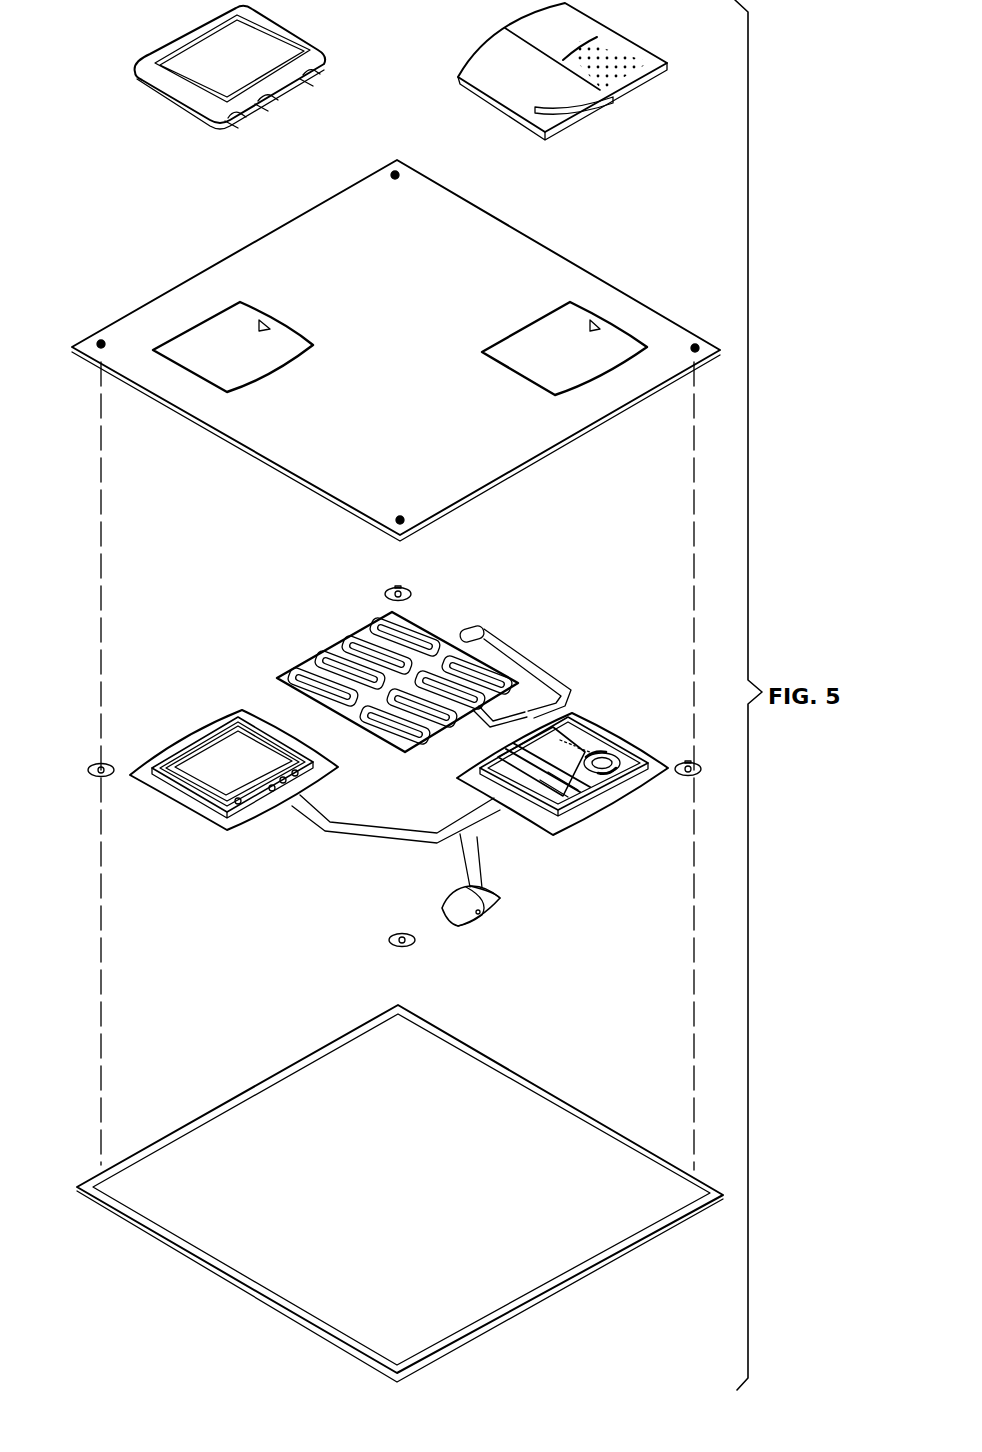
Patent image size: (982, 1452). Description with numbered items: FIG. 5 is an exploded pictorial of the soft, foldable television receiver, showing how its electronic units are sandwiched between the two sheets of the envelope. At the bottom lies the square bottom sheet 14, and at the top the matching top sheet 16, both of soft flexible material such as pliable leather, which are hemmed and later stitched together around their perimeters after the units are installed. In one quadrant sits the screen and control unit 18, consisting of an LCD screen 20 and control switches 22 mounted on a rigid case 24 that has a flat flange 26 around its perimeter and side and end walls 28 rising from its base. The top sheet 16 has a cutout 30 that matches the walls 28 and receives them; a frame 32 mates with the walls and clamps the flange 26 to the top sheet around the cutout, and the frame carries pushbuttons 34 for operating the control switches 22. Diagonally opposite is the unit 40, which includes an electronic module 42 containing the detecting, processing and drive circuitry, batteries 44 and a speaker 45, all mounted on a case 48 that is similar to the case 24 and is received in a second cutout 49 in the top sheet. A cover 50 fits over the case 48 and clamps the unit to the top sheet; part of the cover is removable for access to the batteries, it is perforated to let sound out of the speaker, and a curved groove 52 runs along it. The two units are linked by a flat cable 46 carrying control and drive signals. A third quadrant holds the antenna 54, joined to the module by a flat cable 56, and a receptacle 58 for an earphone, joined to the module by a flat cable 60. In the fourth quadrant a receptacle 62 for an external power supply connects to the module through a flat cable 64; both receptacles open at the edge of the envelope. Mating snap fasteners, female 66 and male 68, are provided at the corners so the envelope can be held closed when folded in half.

The bottom sheet 14 is at (538, 1300).
The top sheet 16 is at (552, 448).
The screen and control unit 18 is at (226, 765).
The LCD screen 20 is at (230, 742).
The control switches 22 is at (283, 783).
The rigid case 24 is at (155, 795).
The flat flange 26 is at (215, 818).
The side and end walls 28 is at (182, 737).
The cutout 30 is at (270, 328).
The frame 32 is at (180, 97).
The pushbuttons 34 is at (312, 72).
The unit 40 is at (530, 770).
The electronic module 42 is at (572, 727).
The batteries 44 is at (583, 780).
The speaker 45 is at (610, 745).
The flat cable 46 is at (362, 837).
The case 48 is at (463, 785).
The cutout 49 is at (598, 328).
The cover 50 is at (615, 26).
The curved groove 52 is at (572, 110).
The antenna 54 is at (422, 620).
The flat cable 56 is at (483, 728).
The receptacle 58 is at (480, 625).
The flat cable 60 is at (523, 657).
The receptacle 62 is at (470, 920).
The flat cable 64 is at (463, 865).
The female snap fastener 66 is at (390, 944).
The male snap fastener 68 is at (682, 762).